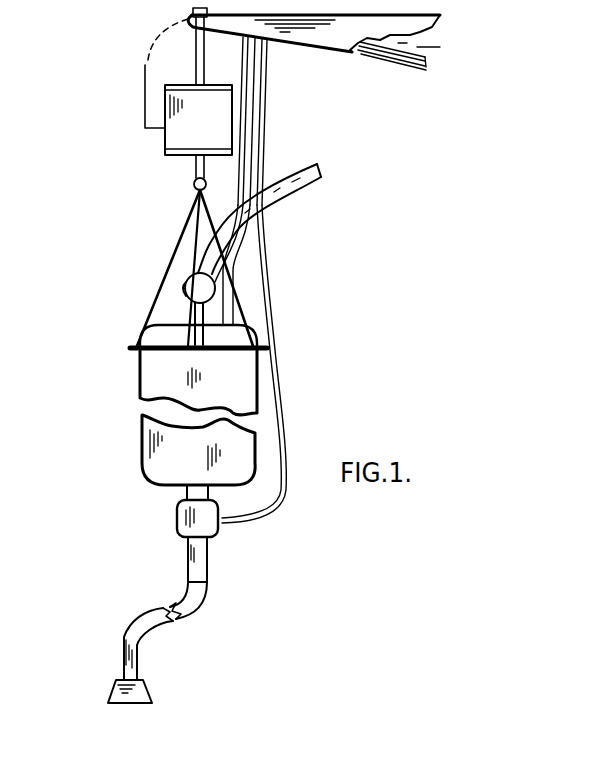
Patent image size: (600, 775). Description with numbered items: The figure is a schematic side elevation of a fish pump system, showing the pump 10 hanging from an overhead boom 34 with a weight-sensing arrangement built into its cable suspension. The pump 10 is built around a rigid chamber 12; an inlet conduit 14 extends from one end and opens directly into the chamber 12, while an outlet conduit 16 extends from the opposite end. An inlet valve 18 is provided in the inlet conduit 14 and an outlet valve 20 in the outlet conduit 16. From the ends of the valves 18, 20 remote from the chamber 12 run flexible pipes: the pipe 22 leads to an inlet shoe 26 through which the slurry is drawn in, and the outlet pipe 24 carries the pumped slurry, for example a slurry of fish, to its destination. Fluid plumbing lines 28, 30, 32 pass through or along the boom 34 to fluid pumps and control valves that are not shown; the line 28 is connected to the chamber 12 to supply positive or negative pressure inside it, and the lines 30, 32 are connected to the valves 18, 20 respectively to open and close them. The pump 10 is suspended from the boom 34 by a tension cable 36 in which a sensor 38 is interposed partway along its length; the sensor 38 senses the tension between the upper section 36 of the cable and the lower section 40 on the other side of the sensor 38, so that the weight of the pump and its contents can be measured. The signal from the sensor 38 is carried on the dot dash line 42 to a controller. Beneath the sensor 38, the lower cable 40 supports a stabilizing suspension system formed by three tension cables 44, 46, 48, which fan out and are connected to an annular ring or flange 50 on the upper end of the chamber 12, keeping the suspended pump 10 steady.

The pump 10 is at (164, 423).
The rigid chamber 12 is at (141, 455).
The inlet conduit 14 is at (186, 492).
The outlet conduit 16 is at (206, 338).
The inlet valve 18 is at (178, 520).
The outlet valve 20 is at (184, 292).
The flexible pipe 22 is at (206, 598).
The outlet pipe 24 is at (306, 174).
The inlet shoe 26 is at (152, 694).
The fluid plumbing line 28 is at (373, 57).
The fluid plumbing line 30 is at (403, 63).
The fluid plumbing line 32 is at (425, 63).
The boom 34 is at (330, 44).
The tension cable 36 is at (196, 48).
The sensor 38 is at (167, 140).
The lower section of cable 40 is at (194, 172).
The dot dash line 42 is at (143, 102).
The tension cable 44 is at (248, 288).
The tension cable 46 is at (178, 348).
The tension cable 48 is at (168, 266).
The annular ring or flange 50 is at (134, 348).